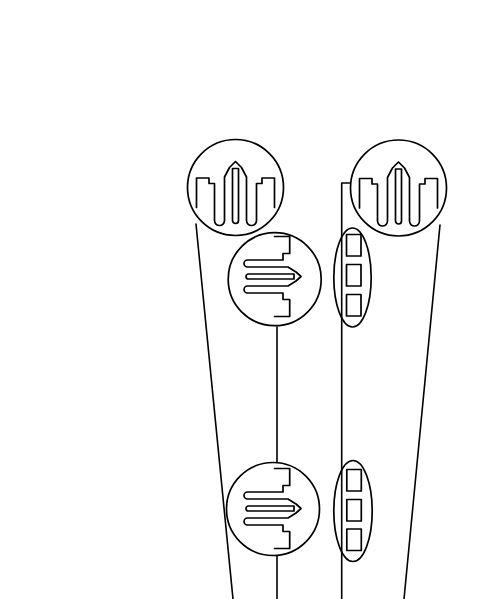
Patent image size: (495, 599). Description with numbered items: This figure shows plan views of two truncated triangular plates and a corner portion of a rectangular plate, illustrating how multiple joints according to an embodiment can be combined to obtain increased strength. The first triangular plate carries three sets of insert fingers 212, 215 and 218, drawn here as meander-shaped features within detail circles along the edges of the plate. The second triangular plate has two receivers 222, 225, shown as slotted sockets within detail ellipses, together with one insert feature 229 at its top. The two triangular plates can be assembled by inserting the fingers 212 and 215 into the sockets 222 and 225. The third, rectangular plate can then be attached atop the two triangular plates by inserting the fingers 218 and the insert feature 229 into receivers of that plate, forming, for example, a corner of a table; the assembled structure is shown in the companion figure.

The insert fingers 218 is at (217, 141).
The insert feature 229 is at (375, 142).
The insert fingers 215 is at (252, 327).
The insert fingers 212 is at (269, 463).
The receiver 225 is at (364, 319).
The receiver 222 is at (352, 460).